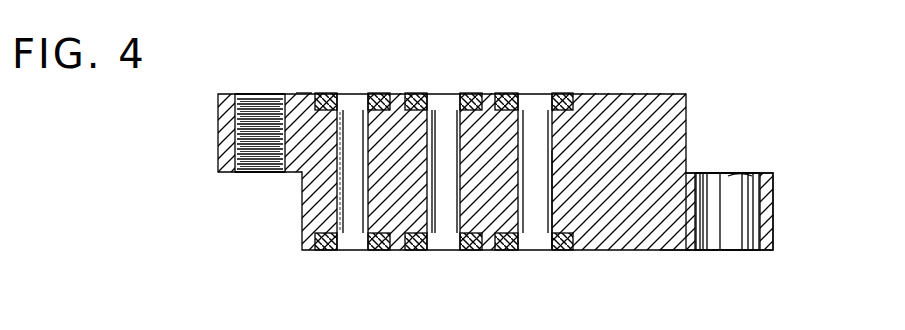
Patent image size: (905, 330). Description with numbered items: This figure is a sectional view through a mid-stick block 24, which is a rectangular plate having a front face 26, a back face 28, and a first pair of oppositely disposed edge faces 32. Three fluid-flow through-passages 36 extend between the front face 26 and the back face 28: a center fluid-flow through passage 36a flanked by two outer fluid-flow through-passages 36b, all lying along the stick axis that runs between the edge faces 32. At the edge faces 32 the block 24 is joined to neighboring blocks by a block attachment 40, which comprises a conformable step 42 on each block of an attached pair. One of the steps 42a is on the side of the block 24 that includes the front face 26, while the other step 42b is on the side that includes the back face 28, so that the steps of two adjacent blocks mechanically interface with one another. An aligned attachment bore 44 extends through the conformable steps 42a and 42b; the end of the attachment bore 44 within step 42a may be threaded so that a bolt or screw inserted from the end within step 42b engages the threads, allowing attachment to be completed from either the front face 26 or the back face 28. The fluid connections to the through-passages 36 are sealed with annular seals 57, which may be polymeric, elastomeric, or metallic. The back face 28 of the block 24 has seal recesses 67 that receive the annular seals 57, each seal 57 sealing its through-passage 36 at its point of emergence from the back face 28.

The block 24 is at (353, 76).
The front face 26 is at (303, 92).
The back face 28 is at (672, 252).
The first pair of oppositely disposed edge faces 32 is at (217, 126).
The block attachment 40 is at (746, 153).
The conformable step 42 is at (216, 152).
The step 42a is at (229, 175).
The step 42b is at (760, 175).
The attachment bore 44 is at (233, 108).
The fluid-flow through-passage 36 is at (557, 207).
The center fluid-flow through passage 36a is at (464, 184).
The outer fluid-flow through-passage 36b is at (378, 178).
The annular seal 57 is at (383, 92).
The seal recess 67 is at (326, 252).